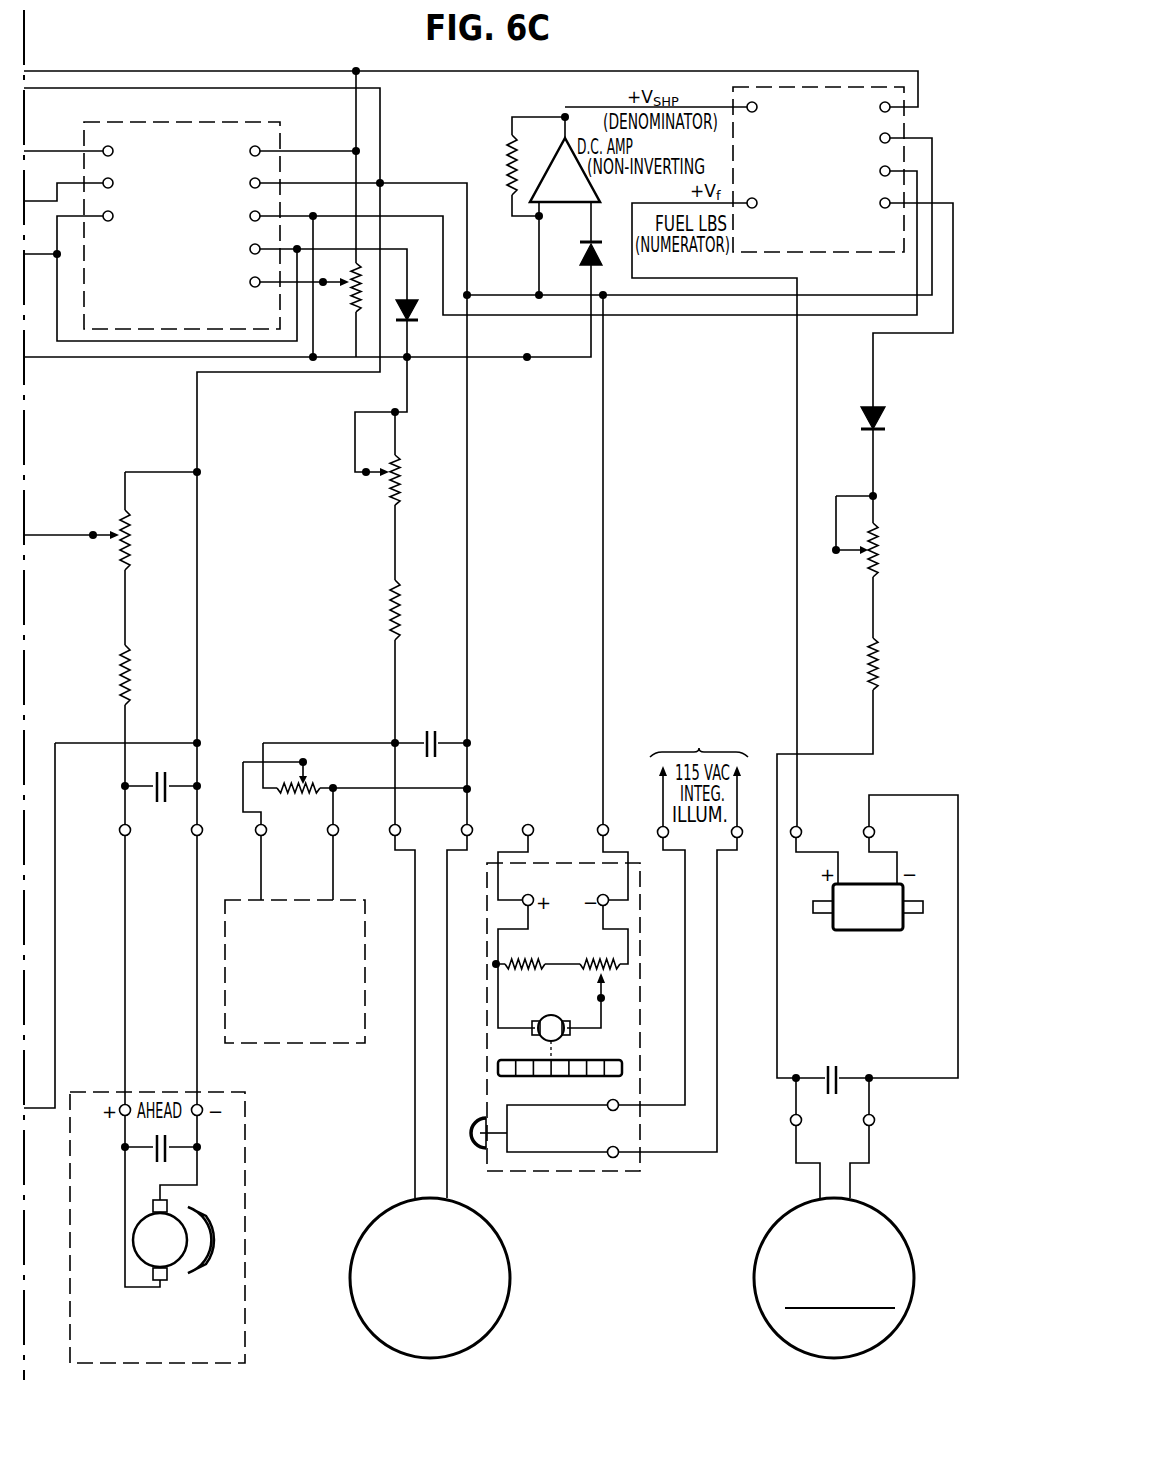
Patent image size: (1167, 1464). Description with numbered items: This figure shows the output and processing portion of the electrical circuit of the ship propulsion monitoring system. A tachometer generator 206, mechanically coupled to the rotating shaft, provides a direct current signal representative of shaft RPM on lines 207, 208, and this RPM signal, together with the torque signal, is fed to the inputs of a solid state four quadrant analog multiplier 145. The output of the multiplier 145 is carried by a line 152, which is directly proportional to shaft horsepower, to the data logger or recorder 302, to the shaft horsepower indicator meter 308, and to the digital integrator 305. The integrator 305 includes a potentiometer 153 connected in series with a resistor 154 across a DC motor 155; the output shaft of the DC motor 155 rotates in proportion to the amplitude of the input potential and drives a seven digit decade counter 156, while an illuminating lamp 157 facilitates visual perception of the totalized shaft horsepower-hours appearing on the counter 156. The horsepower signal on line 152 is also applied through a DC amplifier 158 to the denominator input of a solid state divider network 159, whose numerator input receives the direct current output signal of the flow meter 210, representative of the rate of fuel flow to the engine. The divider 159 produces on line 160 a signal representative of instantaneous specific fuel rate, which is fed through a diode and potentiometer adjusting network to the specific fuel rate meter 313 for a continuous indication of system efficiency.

The solid state 4 quadrant analog multiplier 145 is at (199, 121).
The line 152 is at (414, 250).
The potentiometer 153 is at (614, 959).
The resistor 154 is at (513, 959).
The DC motor 155 is at (548, 1016).
The 7 digit decade counter 156 is at (606, 1057).
The illuminating lamp 157 is at (477, 1126).
The DC amplifier 158 is at (553, 158).
The solid state divider network 159 is at (830, 253).
The line 160 is at (878, 358).
The tachometer generator 206 is at (247, 1163).
The line 207 is at (126, 938).
The line 208 is at (196, 968).
The flow meter 210 is at (888, 884).
The strip chart recorder 302 is at (295, 1044).
The digital integrator 305 is at (486, 1068).
The shaft horsepower indicator meter 308 is at (389, 1208).
The specific fuel rate meter 313 is at (762, 1250).